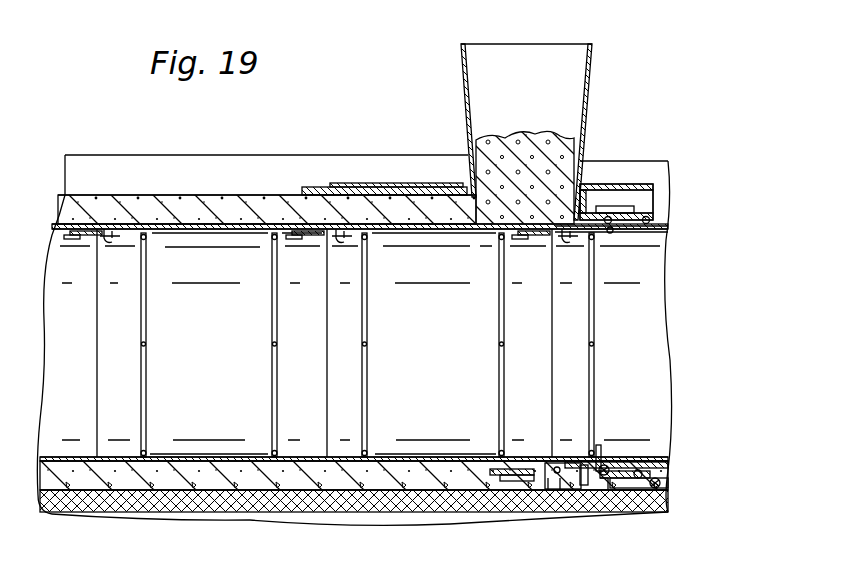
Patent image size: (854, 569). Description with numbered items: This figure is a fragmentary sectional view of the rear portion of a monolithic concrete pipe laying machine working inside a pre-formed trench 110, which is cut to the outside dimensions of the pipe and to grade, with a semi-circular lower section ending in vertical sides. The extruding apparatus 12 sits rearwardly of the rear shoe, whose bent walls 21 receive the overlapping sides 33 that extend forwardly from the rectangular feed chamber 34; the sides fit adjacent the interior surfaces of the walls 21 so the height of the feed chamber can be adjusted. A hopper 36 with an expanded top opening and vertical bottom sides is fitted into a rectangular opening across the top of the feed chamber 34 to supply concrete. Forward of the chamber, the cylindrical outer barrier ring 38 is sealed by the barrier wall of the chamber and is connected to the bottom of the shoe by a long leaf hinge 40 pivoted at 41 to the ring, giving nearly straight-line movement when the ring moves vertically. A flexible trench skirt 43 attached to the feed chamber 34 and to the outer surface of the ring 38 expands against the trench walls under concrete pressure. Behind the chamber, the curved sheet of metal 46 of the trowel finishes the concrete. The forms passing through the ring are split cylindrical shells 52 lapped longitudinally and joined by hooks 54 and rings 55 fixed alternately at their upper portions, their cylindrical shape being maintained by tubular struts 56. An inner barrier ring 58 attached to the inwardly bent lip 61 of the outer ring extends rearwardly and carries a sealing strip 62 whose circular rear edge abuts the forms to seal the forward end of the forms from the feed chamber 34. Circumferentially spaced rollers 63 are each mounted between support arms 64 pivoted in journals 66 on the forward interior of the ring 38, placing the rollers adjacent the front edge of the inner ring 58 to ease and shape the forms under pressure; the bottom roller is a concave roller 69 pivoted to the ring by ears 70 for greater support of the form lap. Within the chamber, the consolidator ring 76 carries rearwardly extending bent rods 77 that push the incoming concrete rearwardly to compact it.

The extruding apparatus 12 is at (624, 178).
The walls 21 is at (641, 492).
The sides 33 is at (647, 202).
The feed chamber 34 is at (610, 186).
The hopper 36 is at (589, 90).
The outer barrier ring 38 is at (604, 488).
The leaf hinge 40 is at (676, 482).
The pivot 41 is at (666, 477).
The trench skirt 43 is at (560, 488).
The curved sheet of metal 46 is at (305, 190).
The split cylindrical shells 52 is at (63, 233).
The hooks 54 is at (110, 242).
The rings 55 is at (84, 239).
The tubular struts 56 is at (147, 312).
The inner barrier ring 58 is at (599, 465).
The lip 61 is at (583, 462).
The sealing strip 62 is at (556, 465).
The rollers 63 is at (607, 234).
The support arms 64 is at (628, 222).
The journals 66 is at (655, 220).
The concave roller 69 is at (609, 466).
The ears 70 is at (650, 476).
The consolidator ring 76 is at (513, 477).
The bent rods 77 is at (494, 470).
The trench 110 is at (202, 162).